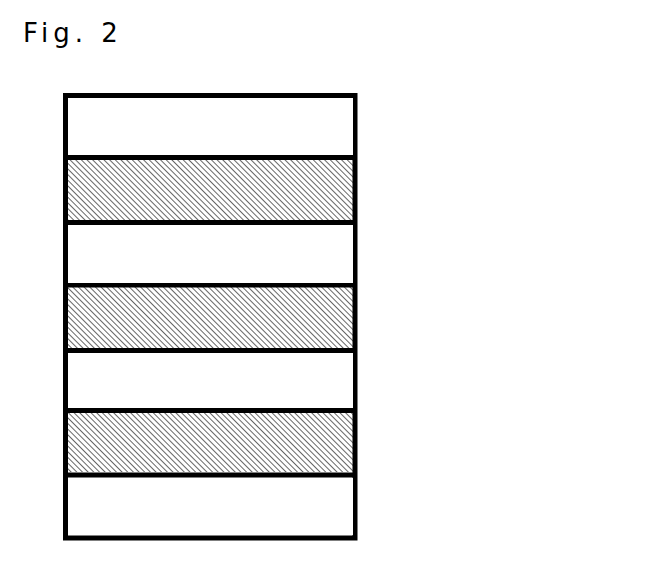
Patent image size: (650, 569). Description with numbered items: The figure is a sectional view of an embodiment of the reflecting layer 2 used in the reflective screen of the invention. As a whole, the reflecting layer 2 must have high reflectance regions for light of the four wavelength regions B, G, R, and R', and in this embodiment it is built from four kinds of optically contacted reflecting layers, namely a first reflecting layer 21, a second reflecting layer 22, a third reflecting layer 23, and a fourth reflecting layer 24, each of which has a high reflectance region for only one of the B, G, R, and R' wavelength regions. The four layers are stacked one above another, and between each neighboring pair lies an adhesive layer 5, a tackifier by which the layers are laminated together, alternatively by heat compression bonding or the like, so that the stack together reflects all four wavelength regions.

The reflecting layer 2 is at (349, 315).
The first reflecting layer 21 is at (280, 123).
The second reflecting layer 22 is at (280, 257).
The third reflecting layer 23 is at (280, 385).
The fourth reflecting layer 24 is at (280, 512).
The adhesive layer 5 is at (280, 194).